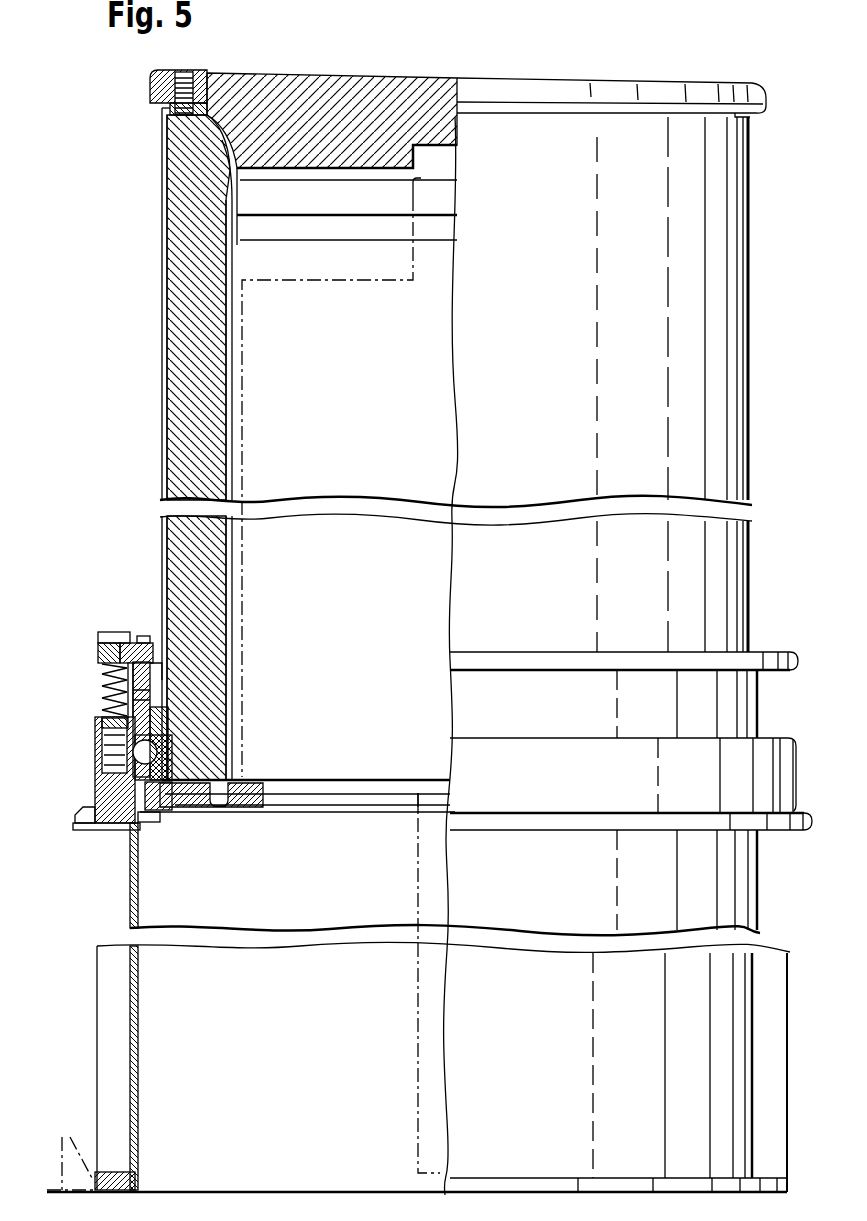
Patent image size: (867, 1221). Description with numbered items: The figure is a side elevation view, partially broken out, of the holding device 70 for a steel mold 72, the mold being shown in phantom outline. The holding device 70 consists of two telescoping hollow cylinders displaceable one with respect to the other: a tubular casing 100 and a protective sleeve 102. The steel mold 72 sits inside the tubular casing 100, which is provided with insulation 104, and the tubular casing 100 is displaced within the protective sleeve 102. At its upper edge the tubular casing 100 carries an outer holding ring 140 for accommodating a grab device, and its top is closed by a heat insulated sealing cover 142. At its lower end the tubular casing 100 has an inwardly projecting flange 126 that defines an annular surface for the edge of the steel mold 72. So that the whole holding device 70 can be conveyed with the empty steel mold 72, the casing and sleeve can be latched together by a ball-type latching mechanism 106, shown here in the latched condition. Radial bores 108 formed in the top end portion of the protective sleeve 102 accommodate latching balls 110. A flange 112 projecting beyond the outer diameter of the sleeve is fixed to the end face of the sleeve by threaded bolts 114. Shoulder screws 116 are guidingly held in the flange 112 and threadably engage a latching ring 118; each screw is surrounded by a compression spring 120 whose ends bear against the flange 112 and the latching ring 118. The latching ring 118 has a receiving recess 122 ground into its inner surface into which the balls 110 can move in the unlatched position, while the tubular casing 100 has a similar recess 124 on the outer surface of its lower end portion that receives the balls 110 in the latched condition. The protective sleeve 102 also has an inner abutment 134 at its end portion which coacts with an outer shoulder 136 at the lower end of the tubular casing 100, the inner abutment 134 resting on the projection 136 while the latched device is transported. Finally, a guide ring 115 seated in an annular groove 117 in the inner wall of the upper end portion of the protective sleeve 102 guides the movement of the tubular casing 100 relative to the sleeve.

The holding device 70 is at (158, 210).
The steel mold 72 is at (232, 333).
The tubular casing 100 is at (164, 378).
The protective sleeve 102 is at (130, 900).
The insulation 104 is at (190, 427).
The ball-type latching mechanism 106 is at (93, 712).
The radial bores 108 is at (133, 777).
The latching balls 110 is at (133, 754).
The flange 112 is at (134, 643).
The threaded bolts 114 is at (145, 636).
The guide ring 115 is at (143, 696).
The shoulder screws 116 is at (100, 648).
The annular groove 117 is at (158, 670).
The latching ring 118 is at (80, 815).
The compression spring 120 is at (102, 678).
The receiving recess 122 is at (123, 828).
The recess 124 is at (128, 731).
The inwardly projecting flange 126 is at (237, 814).
The inner abutment 134 is at (170, 795).
The outer shoulder 136 is at (155, 812).
The outer holding ring 140 is at (150, 90).
The heat insulated sealing cover 142 is at (313, 97).